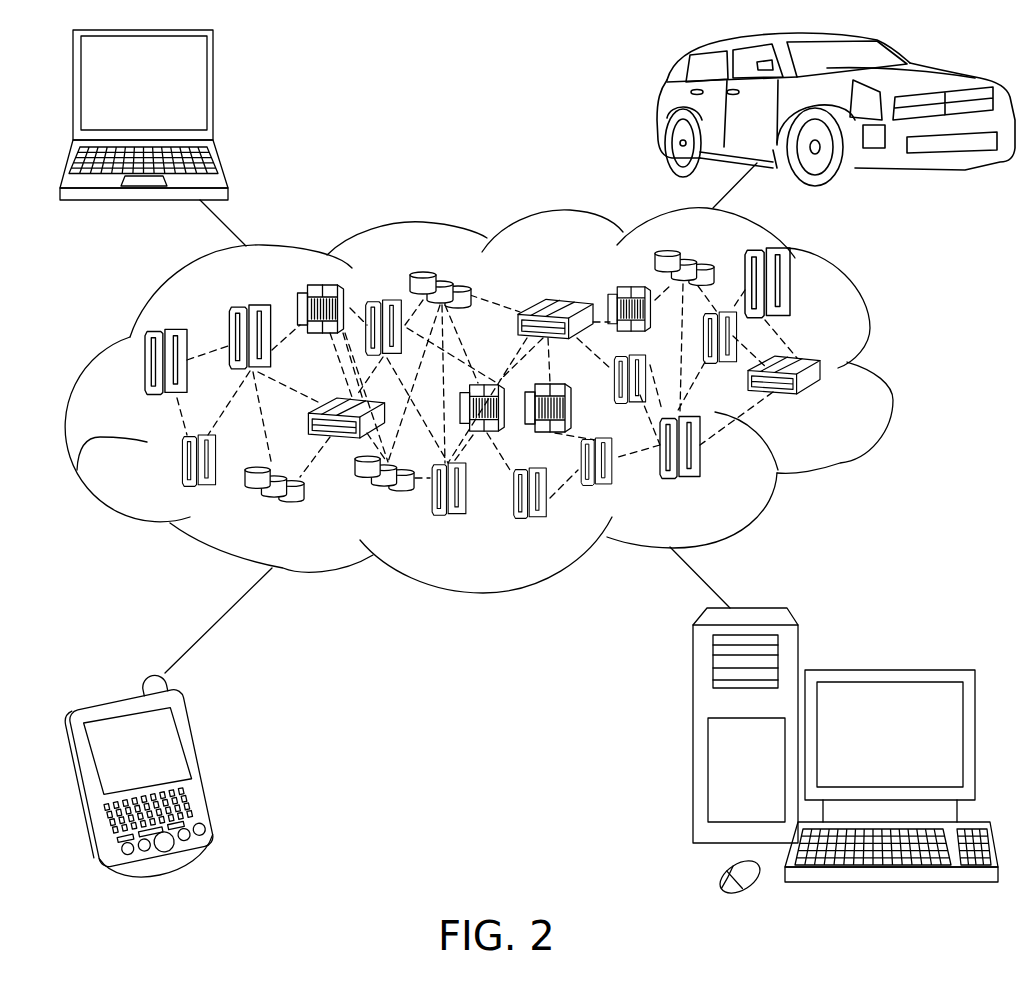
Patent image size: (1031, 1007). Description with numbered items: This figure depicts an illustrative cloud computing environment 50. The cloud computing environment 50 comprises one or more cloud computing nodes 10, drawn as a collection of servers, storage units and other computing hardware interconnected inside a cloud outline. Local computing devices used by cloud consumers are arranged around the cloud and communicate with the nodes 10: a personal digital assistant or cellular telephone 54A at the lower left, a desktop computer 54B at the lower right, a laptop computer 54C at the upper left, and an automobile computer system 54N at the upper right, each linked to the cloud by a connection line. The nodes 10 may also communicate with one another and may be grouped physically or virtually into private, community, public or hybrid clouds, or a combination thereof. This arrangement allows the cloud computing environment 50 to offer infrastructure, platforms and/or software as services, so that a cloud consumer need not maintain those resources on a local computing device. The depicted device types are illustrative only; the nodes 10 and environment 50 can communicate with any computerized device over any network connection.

The cloud computing node 10 is at (830, 403).
The cloud computing environment 50 is at (887, 376).
The personal digital assistant or cellular telephone 54A is at (207, 765).
The desktop computer 54B is at (887, 670).
The laptop computer 54C is at (213, 92).
The automobile computer system 54N is at (661, 107).